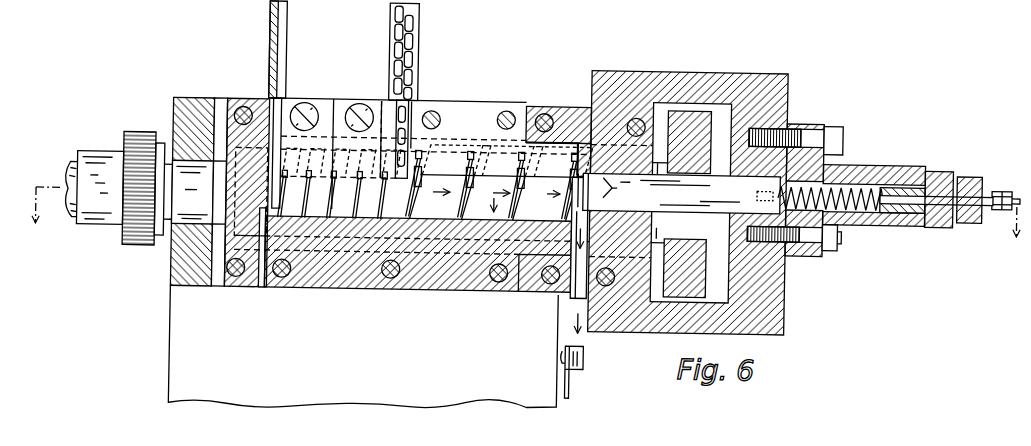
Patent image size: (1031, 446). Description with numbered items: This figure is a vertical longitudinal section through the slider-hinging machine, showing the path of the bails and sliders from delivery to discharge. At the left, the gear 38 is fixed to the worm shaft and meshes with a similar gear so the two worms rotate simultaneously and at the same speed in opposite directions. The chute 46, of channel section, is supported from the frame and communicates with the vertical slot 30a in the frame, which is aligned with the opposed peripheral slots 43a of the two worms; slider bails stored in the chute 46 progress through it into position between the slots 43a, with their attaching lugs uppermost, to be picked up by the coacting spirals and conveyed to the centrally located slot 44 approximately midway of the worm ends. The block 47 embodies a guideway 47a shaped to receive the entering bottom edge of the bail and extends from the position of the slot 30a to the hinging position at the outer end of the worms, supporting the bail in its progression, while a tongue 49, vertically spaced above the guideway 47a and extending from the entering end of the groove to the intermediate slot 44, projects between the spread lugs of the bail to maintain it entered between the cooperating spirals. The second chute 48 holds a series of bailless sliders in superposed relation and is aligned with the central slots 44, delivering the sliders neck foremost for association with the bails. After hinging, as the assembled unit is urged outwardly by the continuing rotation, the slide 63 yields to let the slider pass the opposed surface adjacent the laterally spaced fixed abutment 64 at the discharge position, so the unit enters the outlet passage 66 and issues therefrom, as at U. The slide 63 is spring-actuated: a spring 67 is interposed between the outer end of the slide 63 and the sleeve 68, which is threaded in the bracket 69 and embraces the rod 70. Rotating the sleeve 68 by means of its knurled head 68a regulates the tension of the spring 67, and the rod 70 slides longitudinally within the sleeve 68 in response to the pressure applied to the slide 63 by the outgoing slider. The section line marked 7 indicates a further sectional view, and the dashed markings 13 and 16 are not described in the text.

The gear 38 is at (143, 138).
The chute 46 is at (266, 32).
The second chute 48 is at (417, 27).
The vertical slot 30a is at (278, 122).
The cutter path 13 is at (372, 141).
The feed path 16 is at (497, 150).
The peripheral slot 43a is at (251, 191).
The guideway 47a is at (291, 219).
The tongue 49 is at (321, 190).
The peripheral slot 44 is at (403, 195).
The block 47 is at (298, 294).
The outlet passage 66 is at (572, 302).
The issuing assembled unit U is at (587, 367).
The fixed abutment 64 is at (600, 194).
The slide 63 is at (651, 202).
The spring 67 is at (860, 205).
The sleeve 68 is at (907, 210).
The bracket 69 is at (912, 150).
The knurled head 68a is at (972, 156).
The rod 70 is at (932, 221).
The section line 7- 7 is at (521, 226).